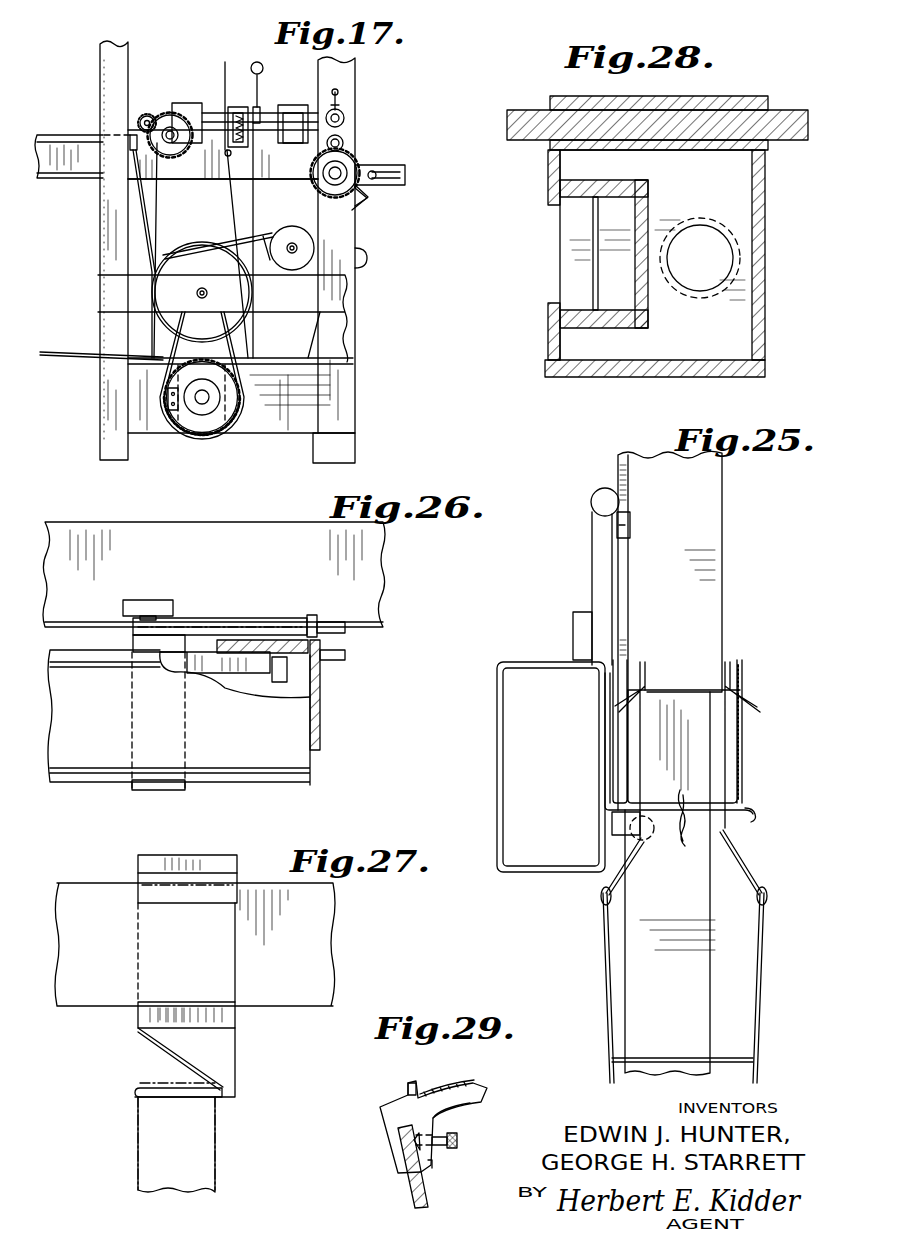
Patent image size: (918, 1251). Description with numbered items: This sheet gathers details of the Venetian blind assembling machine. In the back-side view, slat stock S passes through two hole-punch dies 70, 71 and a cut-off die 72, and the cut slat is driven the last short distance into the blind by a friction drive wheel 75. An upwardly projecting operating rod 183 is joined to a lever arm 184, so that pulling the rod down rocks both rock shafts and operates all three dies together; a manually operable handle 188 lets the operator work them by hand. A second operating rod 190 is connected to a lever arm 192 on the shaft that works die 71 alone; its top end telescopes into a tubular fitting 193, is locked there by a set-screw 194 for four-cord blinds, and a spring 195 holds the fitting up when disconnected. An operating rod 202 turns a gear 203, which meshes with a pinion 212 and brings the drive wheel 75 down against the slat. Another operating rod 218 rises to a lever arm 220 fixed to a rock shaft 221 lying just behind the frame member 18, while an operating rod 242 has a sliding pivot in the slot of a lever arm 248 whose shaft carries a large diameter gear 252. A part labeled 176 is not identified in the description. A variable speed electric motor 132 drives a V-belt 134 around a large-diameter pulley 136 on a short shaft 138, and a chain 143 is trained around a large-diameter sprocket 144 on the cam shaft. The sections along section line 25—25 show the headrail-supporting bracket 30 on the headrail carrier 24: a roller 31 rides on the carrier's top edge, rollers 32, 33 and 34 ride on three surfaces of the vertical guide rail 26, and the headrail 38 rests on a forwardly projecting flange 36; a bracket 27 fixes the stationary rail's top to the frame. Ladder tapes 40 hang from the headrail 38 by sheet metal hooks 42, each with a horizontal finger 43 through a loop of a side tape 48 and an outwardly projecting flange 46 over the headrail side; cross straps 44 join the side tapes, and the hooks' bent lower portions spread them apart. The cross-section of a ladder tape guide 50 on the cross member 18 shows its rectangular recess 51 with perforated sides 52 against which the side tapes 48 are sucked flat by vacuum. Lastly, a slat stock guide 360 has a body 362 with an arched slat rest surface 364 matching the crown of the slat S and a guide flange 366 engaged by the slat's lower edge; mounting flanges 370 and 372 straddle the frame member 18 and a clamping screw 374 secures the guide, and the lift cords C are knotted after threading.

In FIG. 28, the frame member 18 is at (543, 130).
In FIG. 29, the frame member 18 is at (404, 1185).
In FIG. 25, the headrail carrier 24 is at (497, 750).
In FIG. 26, the section line 25 is at (370, 567).
In FIG. 25, the guide rail 26 is at (700, 583).
In FIG. 26, the guide rail 26 is at (322, 688).
In FIG. 25, the bracket 27 is at (773, 683).
In FIG. 25, the headrail-supporting bracket 30 is at (590, 560).
In FIG. 26, the headrail-supporting bracket 30 is at (235, 618).
In FIG. 25, the roller 31 is at (573, 629).
In FIG. 26, the roller 31 is at (150, 600).
In FIG. 25, the roller 32 is at (652, 840).
In FIG. 26, the roller 32 is at (283, 686).
In FIG. 25, the roller 33 is at (603, 488).
In FIG. 26, the roller 33 is at (313, 615).
In FIG. 25, the roller 34 is at (632, 520).
In FIG. 26, the roller 34 is at (345, 656).
In FIG. 25, the flange 36 is at (750, 814).
In FIG. 26, the flange 36 is at (178, 676).
In FIG. 25, the headrail 38 is at (745, 750).
In FIG. 26, the headrail 38 is at (84, 756).
In FIG. 27, the headrail 38 is at (318, 951).
In FIG. 25, the ladder tape 40 is at (604, 949).
In FIG. 27, the ladder tape 40 is at (218, 1142).
In FIG. 25, the sheet metal hook 42 is at (745, 864).
In FIG. 27, the sheet metal hook 42 is at (222, 1055).
In FIG. 25, the horizontal finger 43 is at (600, 899).
In FIG. 27, the horizontal finger 43 is at (165, 1092).
In FIG. 25, the cross straps 44 is at (678, 1057).
In FIG. 25, the outwardly projecting flange 46 is at (758, 698).
In FIG. 27, the outwardly projecting flange 46 is at (185, 892).
In FIG. 28, the side tape 48 is at (578, 200).
In FIG. 25, the side tape 48 is at (606, 1015).
In FIG. 27, the side tape 48 is at (140, 1145).
In FIG. 28, the guide 50 is at (543, 353).
In FIG. 28, the rectangular recess 51 is at (630, 252).
In FIG. 28, the sides of the recess 52 is at (650, 184).
In FIG. 17, the hole-punch die 70 is at (340, 100).
In FIG. 17, the hole-punch die 71 is at (194, 103).
In FIG. 17, the cut-off die 72 is at (256, 95).
In FIG. 17, the friction drive wheel 75 is at (142, 118).
In FIG. 17, the variable speed electric motor 132 is at (300, 245).
In FIG. 17, the V-belt 134 is at (260, 235).
In FIG. 17, the large-diameter pulley 136 is at (192, 272).
In FIG. 17, the short shaft 138 is at (208, 293).
In FIG. 17, the chain 143 is at (185, 437).
In FIG. 17, the large-diameter sprocket 144 is at (240, 393).
In FIG. 17, the rod 176 is at (64, 362).
In FIG. 17, the operating rod 183 is at (262, 178).
In FIG. 17, the lever arm 184 is at (289, 105).
In FIG. 17, the manually operable handle 188 is at (264, 66).
In FIG. 17, the operating rod 190 is at (234, 220).
In FIG. 17, the lever arm 192 is at (224, 88).
In FIG. 17, the tubular fitting 193 is at (232, 132).
In FIG. 17, the set-screw 194 is at (233, 153).
In FIG. 17, the spring 195 is at (239, 107).
In FIG. 17, the operating rod 202 is at (158, 193).
In FIG. 17, the gear 203 is at (169, 112).
In FIG. 17, the pinion 212 is at (162, 118).
In FIG. 17, the operating rod 218 is at (142, 208).
In FIG. 17, the lever arm 220 is at (130, 148).
In FIG. 17, the rock shaft 221 is at (70, 136).
In FIG. 17, the operating rod 242 is at (368, 198).
In FIG. 17, the lever arm 248 is at (390, 165).
In FIG. 17, the large diameter gear 252 is at (343, 160).
In FIG. 29, the slat stock guide 360 is at (496, 1081).
In FIG. 29, the body 362 is at (452, 1104).
In FIG. 29, the arched slat rest surface 364 is at (470, 1082).
In FIG. 29, the guide flange 366 is at (411, 1082).
In FIG. 29, the mounting flange 370 is at (393, 1163).
In FIG. 29, the mounting flange 372 is at (431, 1160).
In FIG. 29, the clamping screw 374 is at (460, 1142).
In FIG. 25, the cord C is at (686, 822).
In FIG. 29, the slat S is at (446, 1086).